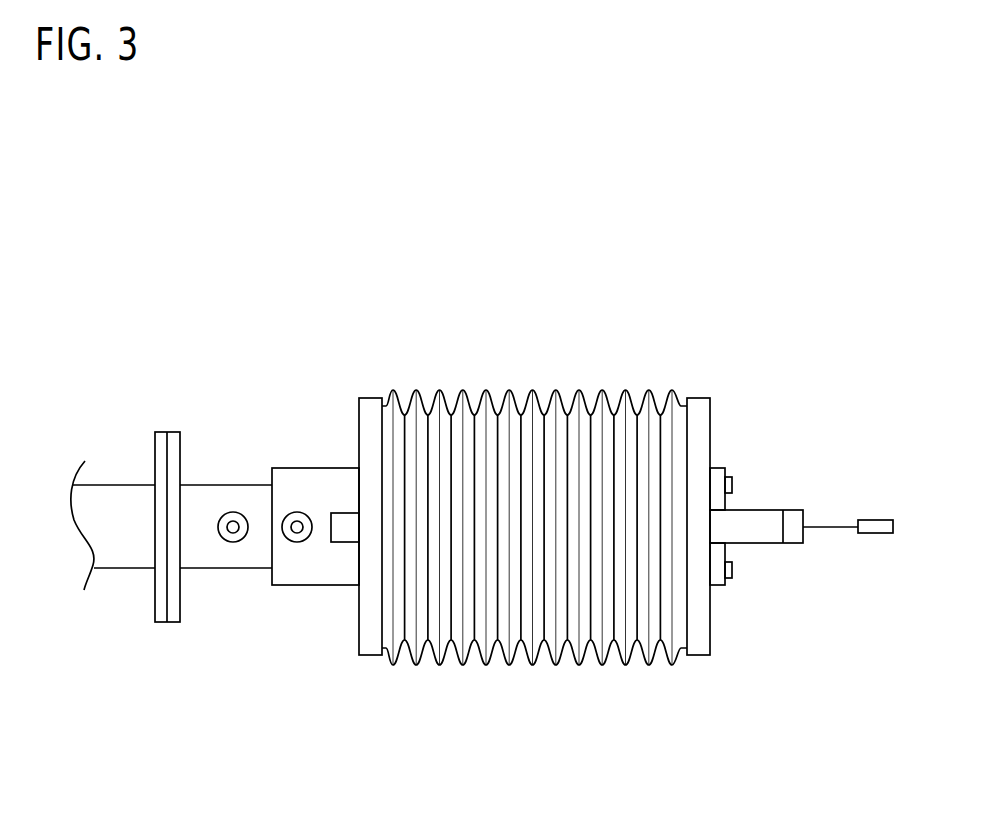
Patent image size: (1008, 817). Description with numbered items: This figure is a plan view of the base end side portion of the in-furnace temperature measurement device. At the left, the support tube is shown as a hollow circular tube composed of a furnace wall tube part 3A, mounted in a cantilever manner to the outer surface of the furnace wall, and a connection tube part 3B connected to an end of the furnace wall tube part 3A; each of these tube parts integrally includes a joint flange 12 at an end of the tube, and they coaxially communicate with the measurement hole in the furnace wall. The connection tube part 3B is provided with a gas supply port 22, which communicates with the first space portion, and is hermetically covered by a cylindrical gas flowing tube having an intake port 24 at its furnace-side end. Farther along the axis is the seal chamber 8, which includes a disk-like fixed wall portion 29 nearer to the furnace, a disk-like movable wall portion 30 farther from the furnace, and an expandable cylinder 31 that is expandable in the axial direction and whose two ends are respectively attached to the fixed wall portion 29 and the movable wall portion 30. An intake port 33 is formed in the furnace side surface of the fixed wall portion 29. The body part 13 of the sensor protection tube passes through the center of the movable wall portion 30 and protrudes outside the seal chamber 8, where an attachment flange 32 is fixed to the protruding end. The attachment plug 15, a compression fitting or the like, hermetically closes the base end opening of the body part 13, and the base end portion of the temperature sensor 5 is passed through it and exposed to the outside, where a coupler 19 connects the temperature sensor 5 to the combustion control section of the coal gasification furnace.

The furnace wall tube part 3A is at (114, 490).
The connection tube part 3B is at (227, 568).
The joint flange 12 is at (158, 623).
The gas supply port 22 is at (237, 508).
The intake port 24 is at (298, 508).
The intake port 33 is at (333, 543).
The fixed wall portion 29 is at (358, 418).
The expandable cylinder 31 is at (510, 390).
The movable wall portion 30 is at (712, 425).
The attachment flange 32 is at (718, 470).
The seal chamber 8 is at (556, 535).
The body part 13 is at (773, 526).
The attachment plug 15 is at (792, 510).
The temperature sensor 5 is at (838, 523).
The coupler 19 is at (879, 535).